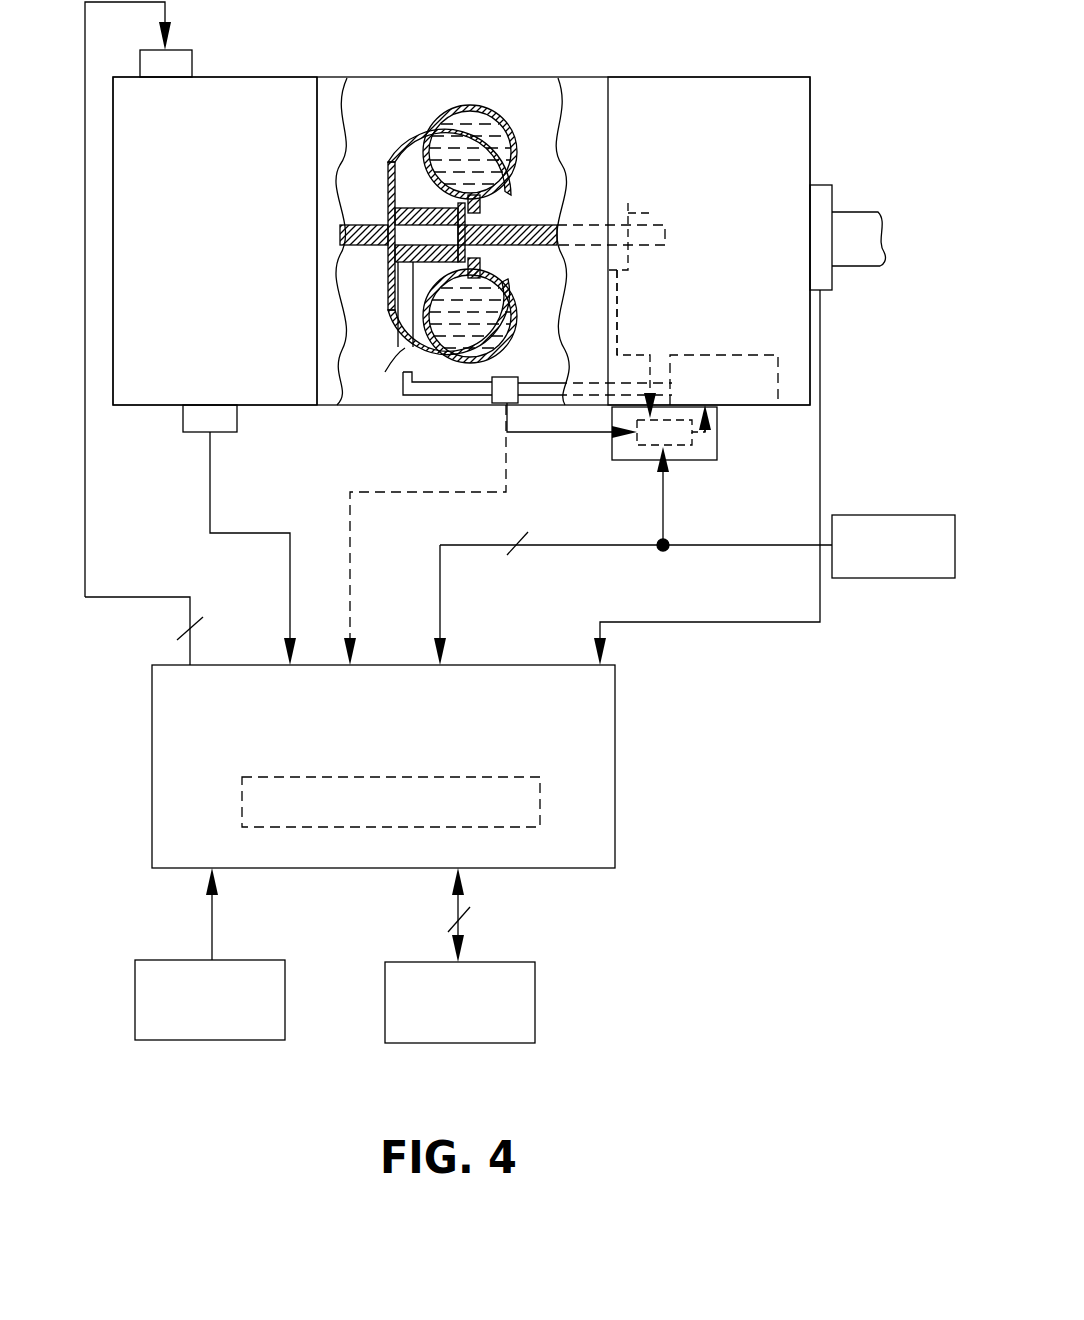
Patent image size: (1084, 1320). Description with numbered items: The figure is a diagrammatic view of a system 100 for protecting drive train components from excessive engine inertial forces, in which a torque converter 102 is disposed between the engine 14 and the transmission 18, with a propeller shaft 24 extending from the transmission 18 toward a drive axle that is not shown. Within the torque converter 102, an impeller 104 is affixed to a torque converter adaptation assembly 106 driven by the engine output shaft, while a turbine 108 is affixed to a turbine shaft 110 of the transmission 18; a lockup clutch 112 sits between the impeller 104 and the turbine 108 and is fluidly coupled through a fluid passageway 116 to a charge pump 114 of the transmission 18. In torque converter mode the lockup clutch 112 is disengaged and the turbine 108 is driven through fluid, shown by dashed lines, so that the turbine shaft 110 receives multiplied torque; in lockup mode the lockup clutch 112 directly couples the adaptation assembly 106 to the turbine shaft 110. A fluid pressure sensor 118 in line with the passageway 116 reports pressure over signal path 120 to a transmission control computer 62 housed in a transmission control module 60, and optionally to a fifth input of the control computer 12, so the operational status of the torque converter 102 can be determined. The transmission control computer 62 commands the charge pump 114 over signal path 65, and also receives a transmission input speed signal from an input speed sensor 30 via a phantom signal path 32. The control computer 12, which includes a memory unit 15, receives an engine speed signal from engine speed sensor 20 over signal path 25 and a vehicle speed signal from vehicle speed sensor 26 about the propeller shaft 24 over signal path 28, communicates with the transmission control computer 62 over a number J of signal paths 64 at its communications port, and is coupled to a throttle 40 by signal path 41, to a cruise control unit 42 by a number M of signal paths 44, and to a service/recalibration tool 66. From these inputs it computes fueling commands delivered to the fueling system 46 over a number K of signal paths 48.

The control computer 12 is at (152, 765).
The engine 14 is at (285, 77).
The memory unit 15 is at (242, 800).
The transmission 18 is at (692, 77).
The engine speed sensor 20 is at (183, 423).
The propeller shaft 24 is at (848, 212).
The signal path 25 is at (210, 490).
The vehicle speed sensor 26 is at (822, 185).
The signal path 28 is at (820, 608).
The transmission input speed sensor 30 is at (634, 213).
The signal path 32 is at (617, 300).
The throttle 40 is at (285, 1012).
The signal path 41 is at (212, 930).
The cruise control unit 42 is at (535, 1012).
The signal paths 44 is at (458, 905).
The fueling system 46 is at (192, 60).
The signal paths 48 is at (108, 597).
The transmission control module 60 is at (700, 460).
The transmission control computer 62 is at (648, 447).
The signal paths 64 is at (548, 545).
The signal path 65 is at (712, 430).
The service/recalibration tool 66 is at (877, 515).
The system 100 is at (800, 1010).
The torque converter 102 is at (378, 77).
The impeller 104 is at (385, 372).
The torque converter adaptation assembly 106 is at (393, 243).
The turbine 108 is at (447, 98).
The turbine shaft 110 is at (565, 168).
The lockup clutch 112 is at (400, 207).
The charge pump 114 is at (708, 355).
The fluid passageway 116 is at (532, 377).
The fluid pressure sensor 118 is at (493, 403).
The signal path 120 is at (405, 493).